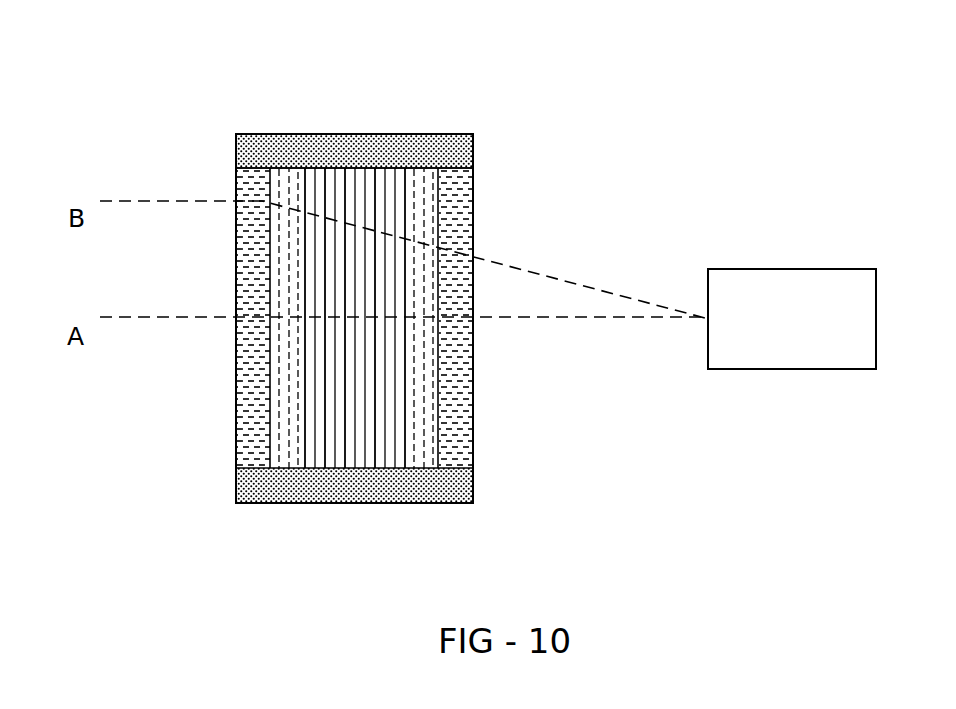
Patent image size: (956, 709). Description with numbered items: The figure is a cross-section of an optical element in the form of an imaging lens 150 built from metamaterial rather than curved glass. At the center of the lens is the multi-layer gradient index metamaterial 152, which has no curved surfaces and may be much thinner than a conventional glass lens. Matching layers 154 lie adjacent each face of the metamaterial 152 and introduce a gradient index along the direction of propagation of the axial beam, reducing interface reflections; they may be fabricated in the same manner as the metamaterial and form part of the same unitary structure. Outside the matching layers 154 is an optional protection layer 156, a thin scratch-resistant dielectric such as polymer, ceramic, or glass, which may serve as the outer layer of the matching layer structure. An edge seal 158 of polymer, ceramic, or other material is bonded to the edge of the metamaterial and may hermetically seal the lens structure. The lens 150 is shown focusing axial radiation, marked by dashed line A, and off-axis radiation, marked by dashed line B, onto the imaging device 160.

The imaging lens 150 is at (132, 125).
The multi-layer gradient index metamaterial 152 is at (338, 452).
The matching layers 154 is at (422, 435).
The protection layer 156 is at (458, 200).
The edge seal 158 is at (270, 150).
The imaging device 160 is at (725, 267).